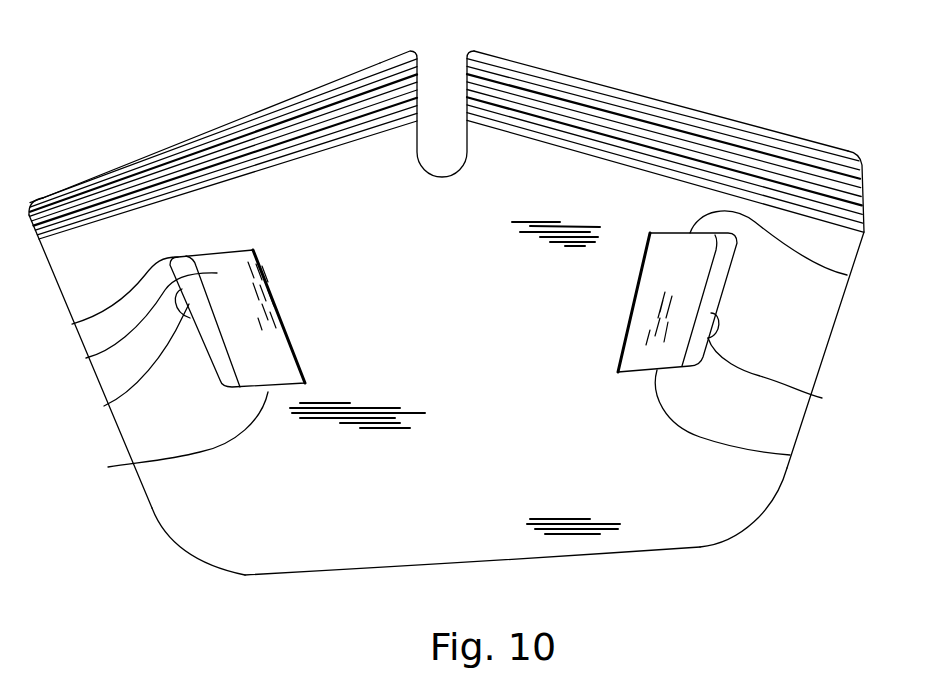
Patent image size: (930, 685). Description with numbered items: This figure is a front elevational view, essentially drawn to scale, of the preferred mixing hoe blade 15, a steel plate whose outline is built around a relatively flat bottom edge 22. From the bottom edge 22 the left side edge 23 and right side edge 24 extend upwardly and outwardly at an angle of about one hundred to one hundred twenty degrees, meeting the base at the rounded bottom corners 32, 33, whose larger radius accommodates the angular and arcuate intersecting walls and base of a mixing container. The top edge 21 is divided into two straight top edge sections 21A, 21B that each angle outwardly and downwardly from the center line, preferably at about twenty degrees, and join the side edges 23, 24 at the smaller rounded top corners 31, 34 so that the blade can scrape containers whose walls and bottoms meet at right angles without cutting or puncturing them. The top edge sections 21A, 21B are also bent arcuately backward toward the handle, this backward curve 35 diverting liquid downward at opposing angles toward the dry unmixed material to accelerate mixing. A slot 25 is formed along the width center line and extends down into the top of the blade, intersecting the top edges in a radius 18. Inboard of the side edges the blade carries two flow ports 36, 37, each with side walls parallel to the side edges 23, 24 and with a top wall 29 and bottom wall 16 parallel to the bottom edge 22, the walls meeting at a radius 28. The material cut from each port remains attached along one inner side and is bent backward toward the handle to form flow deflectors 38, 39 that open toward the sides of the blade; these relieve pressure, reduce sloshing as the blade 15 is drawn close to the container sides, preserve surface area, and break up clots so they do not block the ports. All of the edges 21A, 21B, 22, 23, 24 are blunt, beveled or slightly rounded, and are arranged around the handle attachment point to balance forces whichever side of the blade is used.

The hoe blade 15 is at (293, 35).
The bottom wall of flow port 16 is at (108, 467).
The radius 18 is at (410, 50).
The top edge 21 is at (602, 84).
The top edge section 21A is at (263, 101).
The top edge section 21B is at (626, 91).
The bottom edge 22 is at (366, 573).
The left side edge 23 is at (136, 476).
The right side edge 24 is at (788, 468).
The slot 25 is at (437, 88).
The radius 28 is at (72, 324).
The top wall of flow port 29 is at (847, 275).
The top corner 31 is at (28, 208).
The bottom corner 32 is at (190, 557).
The bottom corner 33 is at (748, 528).
The top corner 34 is at (873, 163).
The backward curve 35 is at (727, 143).
The flow port 36 is at (102, 407).
The flow port 37 is at (822, 398).
The flow deflector 38 is at (86, 358).
The flow deflector 39 is at (790, 455).